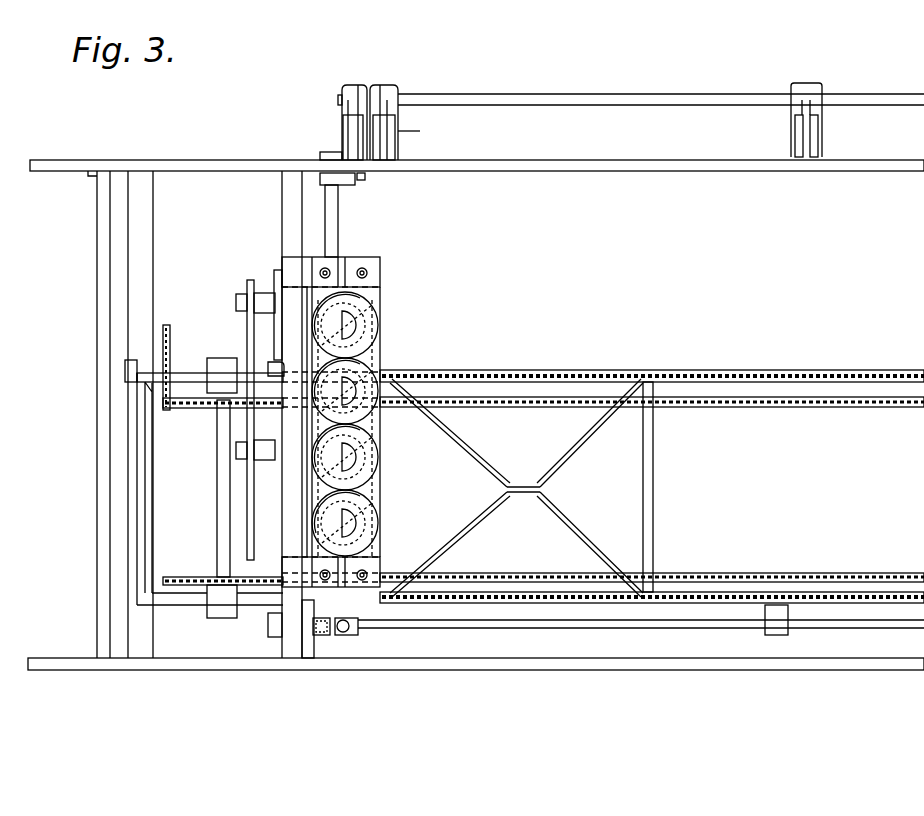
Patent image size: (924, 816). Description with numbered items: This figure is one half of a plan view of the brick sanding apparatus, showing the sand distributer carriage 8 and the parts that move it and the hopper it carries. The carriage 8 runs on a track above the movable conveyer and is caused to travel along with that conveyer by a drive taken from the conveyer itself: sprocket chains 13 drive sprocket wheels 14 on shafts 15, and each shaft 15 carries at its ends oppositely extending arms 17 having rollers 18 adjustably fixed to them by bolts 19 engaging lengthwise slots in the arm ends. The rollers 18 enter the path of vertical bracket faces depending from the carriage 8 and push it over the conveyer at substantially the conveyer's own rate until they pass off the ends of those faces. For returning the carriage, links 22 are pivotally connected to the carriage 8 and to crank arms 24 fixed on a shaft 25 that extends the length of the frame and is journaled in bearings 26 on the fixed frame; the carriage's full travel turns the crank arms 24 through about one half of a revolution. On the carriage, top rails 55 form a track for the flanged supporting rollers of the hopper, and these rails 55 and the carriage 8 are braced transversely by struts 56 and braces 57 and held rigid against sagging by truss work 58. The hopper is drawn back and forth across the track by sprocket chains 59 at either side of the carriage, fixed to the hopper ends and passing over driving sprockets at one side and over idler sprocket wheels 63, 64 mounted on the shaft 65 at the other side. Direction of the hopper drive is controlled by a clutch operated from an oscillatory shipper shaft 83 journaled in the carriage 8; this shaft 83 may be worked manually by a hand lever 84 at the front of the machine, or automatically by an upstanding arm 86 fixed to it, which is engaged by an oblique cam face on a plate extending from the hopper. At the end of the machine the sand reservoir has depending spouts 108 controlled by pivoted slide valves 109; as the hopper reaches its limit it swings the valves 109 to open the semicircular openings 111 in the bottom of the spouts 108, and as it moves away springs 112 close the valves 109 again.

The carriage 8 is at (360, 636).
The sprocket chains 13 is at (130, 372).
The sprocket wheels 14 is at (163, 340).
The shafts 15 is at (188, 378).
The arms 17 is at (247, 331).
The rollers 18 is at (262, 293).
The bolts 19 is at (236, 300).
The links 22 is at (338, 213).
The crank arms 24 is at (342, 126).
The shaft 25 is at (570, 94).
The bearings 26 is at (795, 131).
The top rails 55 is at (880, 370).
The struts 56 is at (654, 492).
The braces 57 is at (507, 487).
The truss work 58 is at (582, 447).
The sprocket chains 59 is at (876, 407).
The idler sprocket wheel 63 is at (190, 585).
The idler sprocket wheel 64 is at (200, 410).
The shaft 65 is at (217, 491).
The shipper shaft 83 is at (698, 628).
The hand lever 84 is at (322, 635).
The arm 86 is at (358, 628).
The spouts 108 is at (370, 338).
The slide valves 109 is at (360, 545).
The semicircular openings 111 is at (352, 324).
The springs 112 is at (312, 318).